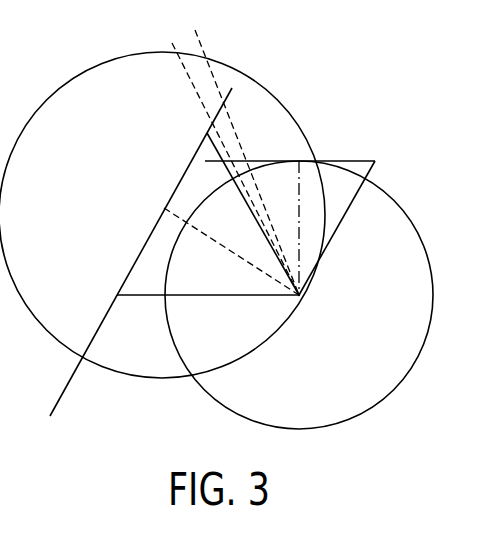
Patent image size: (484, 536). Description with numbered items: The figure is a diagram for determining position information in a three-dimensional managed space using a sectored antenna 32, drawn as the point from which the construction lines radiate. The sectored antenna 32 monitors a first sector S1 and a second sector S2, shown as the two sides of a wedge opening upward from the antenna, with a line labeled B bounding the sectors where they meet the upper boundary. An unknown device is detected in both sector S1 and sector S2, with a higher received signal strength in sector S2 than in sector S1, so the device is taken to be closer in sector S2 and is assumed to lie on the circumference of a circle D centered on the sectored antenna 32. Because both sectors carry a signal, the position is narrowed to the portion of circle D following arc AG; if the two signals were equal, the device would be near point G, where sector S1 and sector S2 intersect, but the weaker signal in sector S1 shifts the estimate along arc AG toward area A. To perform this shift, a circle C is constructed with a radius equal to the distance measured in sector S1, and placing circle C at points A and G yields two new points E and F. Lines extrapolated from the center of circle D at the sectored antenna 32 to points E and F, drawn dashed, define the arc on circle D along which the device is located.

The circle C is at (289, 92).
The circle D is at (392, 177).
The triangle B is at (249, 211).
The second sector S2 is at (151, 254).
The first sector S1 is at (340, 207).
The area A is at (285, 228).
The point G is at (231, 247).
The point E is at (180, 53).
The point F is at (213, 60).
The sectored antenna 32 is at (299, 296).